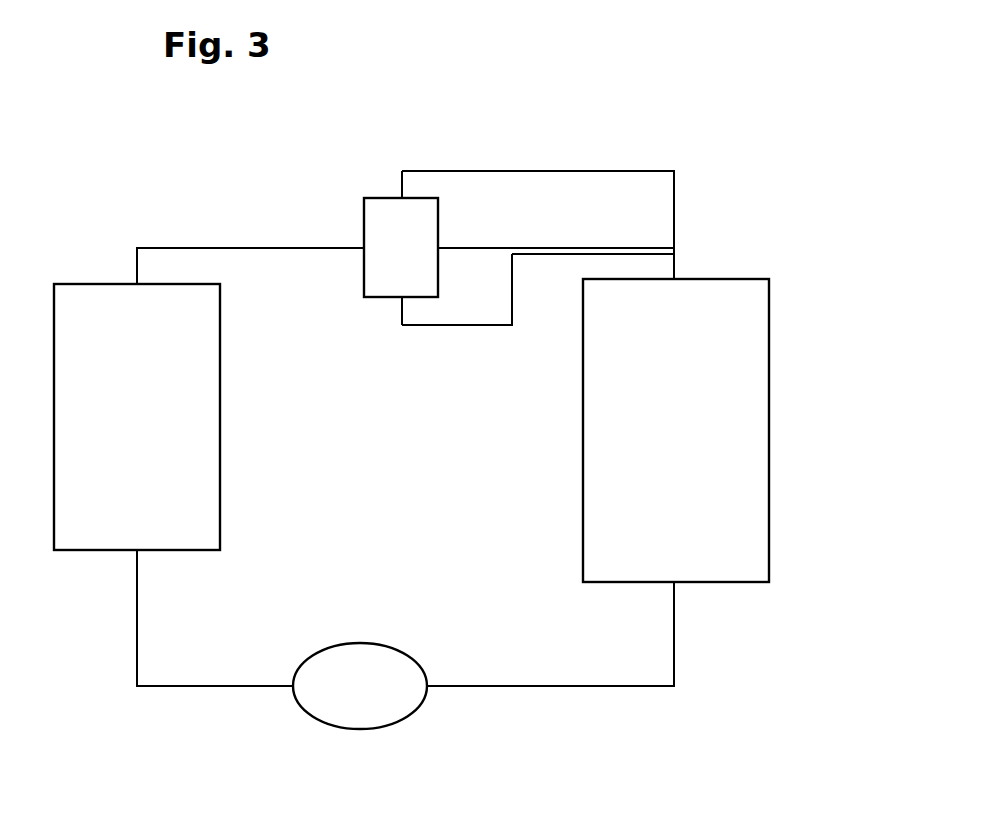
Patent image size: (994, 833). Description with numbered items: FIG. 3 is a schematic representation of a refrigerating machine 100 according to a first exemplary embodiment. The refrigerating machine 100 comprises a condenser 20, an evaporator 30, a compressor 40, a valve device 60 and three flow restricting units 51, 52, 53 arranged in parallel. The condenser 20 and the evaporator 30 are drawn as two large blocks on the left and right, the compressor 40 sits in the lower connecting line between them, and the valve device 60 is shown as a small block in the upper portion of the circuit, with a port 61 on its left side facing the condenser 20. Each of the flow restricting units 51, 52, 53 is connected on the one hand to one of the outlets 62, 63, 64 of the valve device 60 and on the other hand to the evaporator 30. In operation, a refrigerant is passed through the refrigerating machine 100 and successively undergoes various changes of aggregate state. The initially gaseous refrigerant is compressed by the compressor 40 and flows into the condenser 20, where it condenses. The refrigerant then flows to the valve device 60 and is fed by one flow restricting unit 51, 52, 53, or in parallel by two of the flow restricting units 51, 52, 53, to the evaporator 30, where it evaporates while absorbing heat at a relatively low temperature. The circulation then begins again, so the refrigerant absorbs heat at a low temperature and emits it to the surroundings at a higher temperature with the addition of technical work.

The refrigerating machine 100 is at (388, 156).
The condenser 20 is at (107, 537).
The evaporator 30 is at (723, 572).
The compressor 40 is at (400, 707).
The valve device 60 is at (364, 209).
The first valve port 61 is at (362, 250).
The outlet 62 is at (402, 197).
The outlet 63 is at (443, 246).
The outlet 64 is at (400, 298).
The flow restricting unit 51 is at (532, 168).
The flow restricting unit 52 is at (525, 250).
The flow restricting unit 53 is at (513, 263).